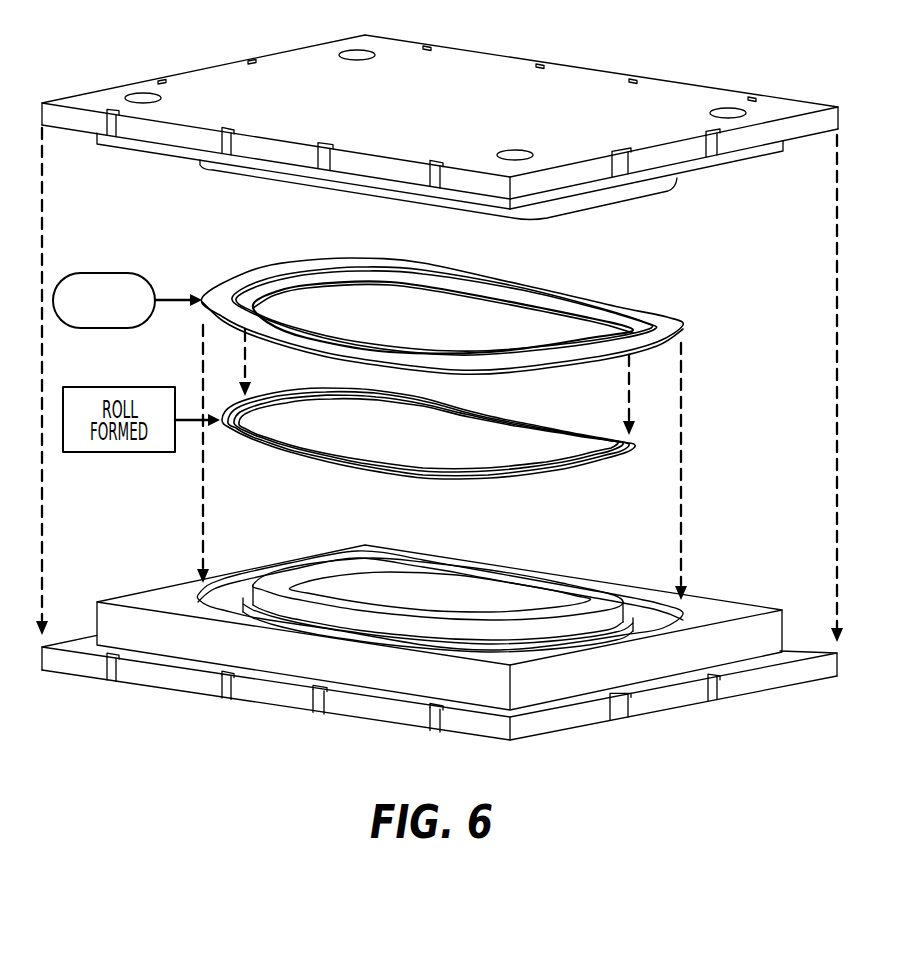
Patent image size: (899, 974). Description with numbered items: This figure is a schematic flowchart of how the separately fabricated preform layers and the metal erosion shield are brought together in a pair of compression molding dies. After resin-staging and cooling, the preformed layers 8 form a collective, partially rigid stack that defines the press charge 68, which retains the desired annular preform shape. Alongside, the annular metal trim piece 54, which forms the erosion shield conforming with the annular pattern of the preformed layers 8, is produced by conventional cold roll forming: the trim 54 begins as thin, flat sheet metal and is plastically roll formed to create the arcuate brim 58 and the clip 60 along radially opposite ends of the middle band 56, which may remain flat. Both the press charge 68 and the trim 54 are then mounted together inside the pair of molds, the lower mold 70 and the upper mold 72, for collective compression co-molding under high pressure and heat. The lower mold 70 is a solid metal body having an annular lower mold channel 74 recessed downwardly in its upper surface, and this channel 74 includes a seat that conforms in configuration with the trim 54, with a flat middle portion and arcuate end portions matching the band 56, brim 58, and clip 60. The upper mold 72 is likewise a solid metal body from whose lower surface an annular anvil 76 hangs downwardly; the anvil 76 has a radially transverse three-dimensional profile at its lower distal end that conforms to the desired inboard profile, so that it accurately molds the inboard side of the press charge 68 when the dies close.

The upper mold 72 is at (602, 62).
The anvil 76 is at (282, 185).
The press charge 68 is at (117, 272).
The preformed layers 8 is at (667, 315).
The annular metal trim piece 54 is at (555, 420).
The middle band 56 is at (233, 420).
The clip 60 is at (258, 432).
The arcuate brim 58 is at (253, 443).
The lower mold channel 74 is at (640, 606).
The lower mold 70 is at (287, 715).